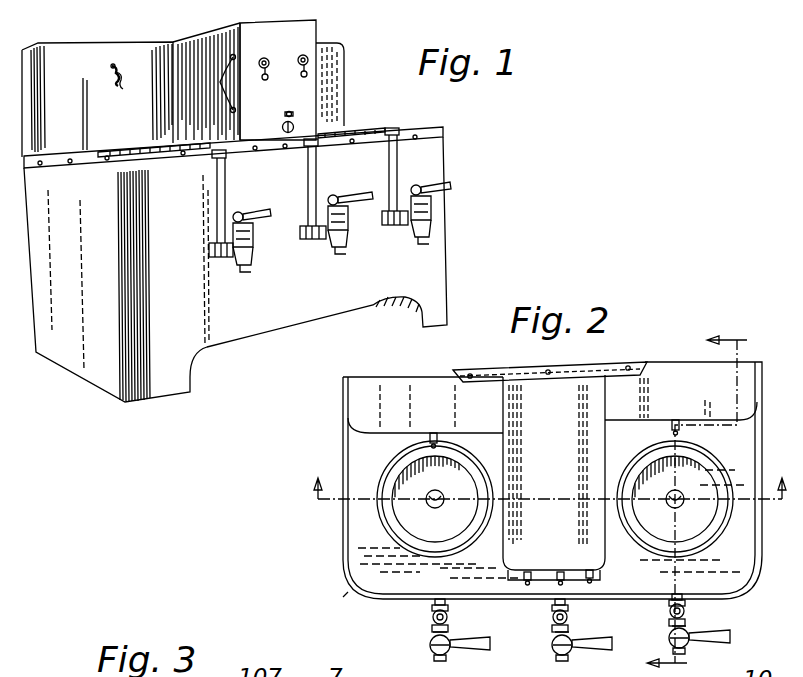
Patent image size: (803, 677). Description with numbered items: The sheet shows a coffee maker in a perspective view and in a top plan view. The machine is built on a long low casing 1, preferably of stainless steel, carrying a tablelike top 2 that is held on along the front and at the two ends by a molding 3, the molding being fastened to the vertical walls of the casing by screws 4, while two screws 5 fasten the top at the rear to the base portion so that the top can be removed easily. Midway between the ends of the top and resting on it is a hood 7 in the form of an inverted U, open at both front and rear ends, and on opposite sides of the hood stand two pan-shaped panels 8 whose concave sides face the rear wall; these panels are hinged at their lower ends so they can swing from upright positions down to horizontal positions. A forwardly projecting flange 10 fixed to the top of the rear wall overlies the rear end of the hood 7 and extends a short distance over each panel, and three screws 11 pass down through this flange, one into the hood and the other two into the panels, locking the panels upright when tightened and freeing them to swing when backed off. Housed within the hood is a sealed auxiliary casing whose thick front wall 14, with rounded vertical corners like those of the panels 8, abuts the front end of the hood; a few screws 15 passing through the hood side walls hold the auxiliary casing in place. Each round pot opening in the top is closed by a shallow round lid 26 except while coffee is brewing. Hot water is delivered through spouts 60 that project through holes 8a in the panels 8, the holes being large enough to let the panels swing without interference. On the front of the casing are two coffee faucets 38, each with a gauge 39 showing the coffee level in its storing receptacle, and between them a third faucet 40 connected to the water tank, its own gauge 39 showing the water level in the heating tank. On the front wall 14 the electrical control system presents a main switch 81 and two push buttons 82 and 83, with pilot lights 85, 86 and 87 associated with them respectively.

In FIG. 1, the casing 1 is at (92, 374).
In FIG. 2, the tablelike top 2 is at (360, 552).
In FIG. 1, the molding 3 is at (88, 162).
In FIG. 2, the molding 3 is at (362, 596).
In FIG. 1, the screws 4 is at (70, 163).
In FIG. 2, the screws 5 is at (550, 506).
In FIG. 1, the hood 7 is at (197, 53).
In FIG. 2, the hood 7 is at (553, 459).
In FIG. 1, the pan-shaped panels 8 is at (77, 52).
In FIG. 2, the pan-shaped panels 8 is at (360, 402).
In FIG. 1, the holes 8a is at (109, 66).
In FIG. 2, the forwardly projecting flange 10 is at (500, 372).
In FIG. 2, the screws 11 is at (470, 372).
In FIG. 1, the front wall 14 is at (316, 35).
In FIG. 2, the front wall 14 is at (522, 562).
In FIG. 1, the screws 15 is at (220, 82).
In FIG. 1, the lid 26 is at (135, 148).
In FIG. 2, the lid 26 is at (450, 539).
In FIG. 1, the faucet 38 is at (242, 266).
In FIG. 2, the faucet 38 is at (450, 656).
In FIG. 1, the gauge 39 is at (227, 190).
In FIG. 2, the gauge 39 is at (432, 617).
In FIG. 1, the third faucet 40 is at (338, 248).
In FIG. 2, the third faucet 40 is at (570, 656).
In FIG. 1, the spouts 60 is at (119, 79).
In FIG. 2, the spouts 60 is at (430, 435).
In FIG. 1, the main switch 81 is at (296, 113).
In FIG. 2, the main switch 81 is at (562, 586).
In FIG. 1, the push button 82 is at (265, 80).
In FIG. 1, the push button 83 is at (304, 77).
In FIG. 1, the pilot light 85 is at (294, 127).
In FIG. 1, the pilot light 86 is at (262, 58).
In FIG. 2, the pilot light 86 is at (528, 586).
In FIG. 1, the pilot light 87 is at (302, 55).
In FIG. 2, the pilot light 87 is at (595, 575).